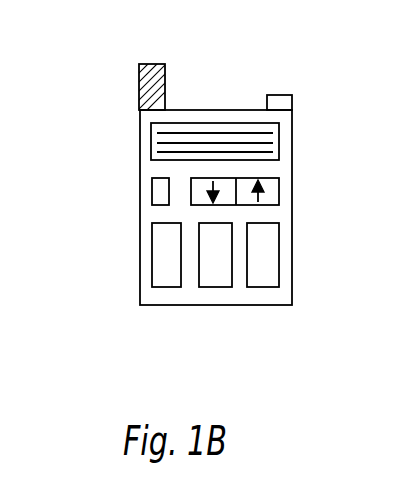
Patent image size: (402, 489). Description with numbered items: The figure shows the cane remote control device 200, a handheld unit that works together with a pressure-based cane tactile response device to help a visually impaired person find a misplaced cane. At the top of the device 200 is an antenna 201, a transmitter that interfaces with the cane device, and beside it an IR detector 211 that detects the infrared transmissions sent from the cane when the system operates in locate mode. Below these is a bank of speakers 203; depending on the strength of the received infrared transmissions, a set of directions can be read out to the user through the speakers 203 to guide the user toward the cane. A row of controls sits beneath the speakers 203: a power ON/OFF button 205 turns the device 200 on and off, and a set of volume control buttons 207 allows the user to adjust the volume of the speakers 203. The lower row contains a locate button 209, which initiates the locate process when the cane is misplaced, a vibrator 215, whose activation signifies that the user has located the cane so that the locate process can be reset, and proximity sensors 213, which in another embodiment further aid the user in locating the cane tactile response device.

The cane remote control device 200 is at (107, 95).
The antenna 201 is at (165, 84).
The speakers 203 is at (270, 138).
The power ON/OFF button 205 is at (151, 188).
The volume control buttons 207 is at (280, 190).
The locate button 209 is at (152, 253).
The IR detector 211 is at (282, 95).
The proximity sensors 213 is at (270, 262).
The vibrator 215 is at (217, 287).